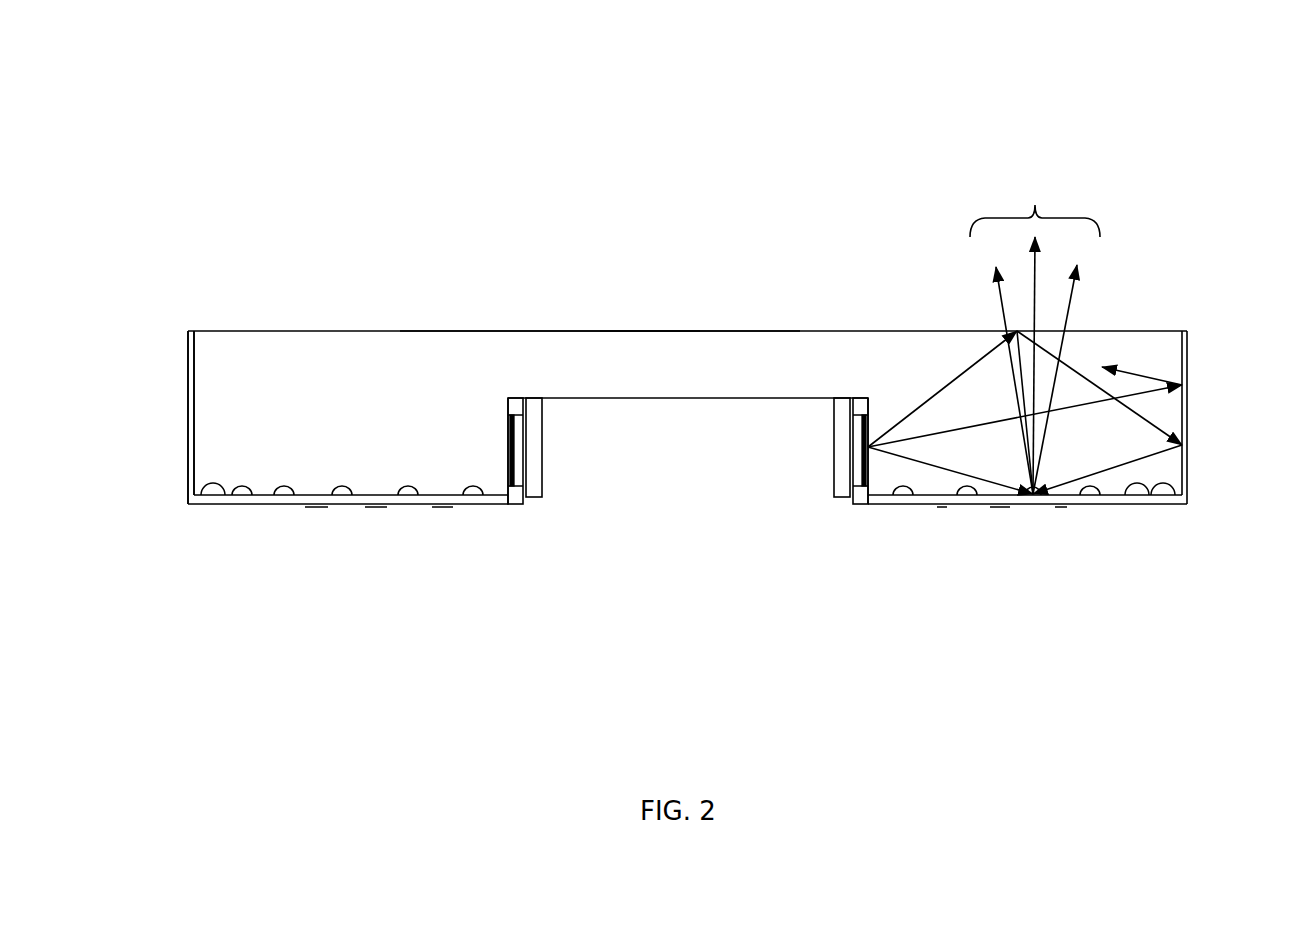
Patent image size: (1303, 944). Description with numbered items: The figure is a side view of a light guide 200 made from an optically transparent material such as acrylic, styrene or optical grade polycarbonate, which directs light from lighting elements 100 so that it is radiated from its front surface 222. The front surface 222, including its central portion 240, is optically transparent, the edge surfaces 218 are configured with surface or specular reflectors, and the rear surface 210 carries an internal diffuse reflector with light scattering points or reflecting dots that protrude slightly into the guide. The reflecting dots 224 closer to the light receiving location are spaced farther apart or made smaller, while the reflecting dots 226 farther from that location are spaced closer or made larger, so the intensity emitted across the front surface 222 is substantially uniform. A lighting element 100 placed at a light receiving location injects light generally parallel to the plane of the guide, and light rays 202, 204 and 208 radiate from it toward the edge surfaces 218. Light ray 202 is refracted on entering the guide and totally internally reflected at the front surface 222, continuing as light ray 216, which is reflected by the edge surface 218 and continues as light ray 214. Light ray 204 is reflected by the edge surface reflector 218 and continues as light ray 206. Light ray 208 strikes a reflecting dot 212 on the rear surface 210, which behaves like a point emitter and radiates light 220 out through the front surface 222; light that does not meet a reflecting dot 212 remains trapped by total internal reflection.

The lighting element 100 is at (833, 423).
The light guide 200 is at (325, 383).
The light ray 202 is at (942, 383).
The light ray 204 is at (977, 422).
The light ray 206 is at (1148, 373).
The light ray 208 is at (970, 493).
The rear surface 210 is at (352, 503).
The reflecting dot 212 is at (1033, 495).
The light ray 214 is at (1133, 497).
The light ray 216 is at (1083, 377).
The edge surface 218 is at (190, 405).
The radiated light 220 is at (1035, 203).
The front surface 222 is at (552, 331).
The reflecting dots 224 is at (472, 498).
The reflecting dots 226 is at (213, 487).
The central portion 240 is at (667, 331).